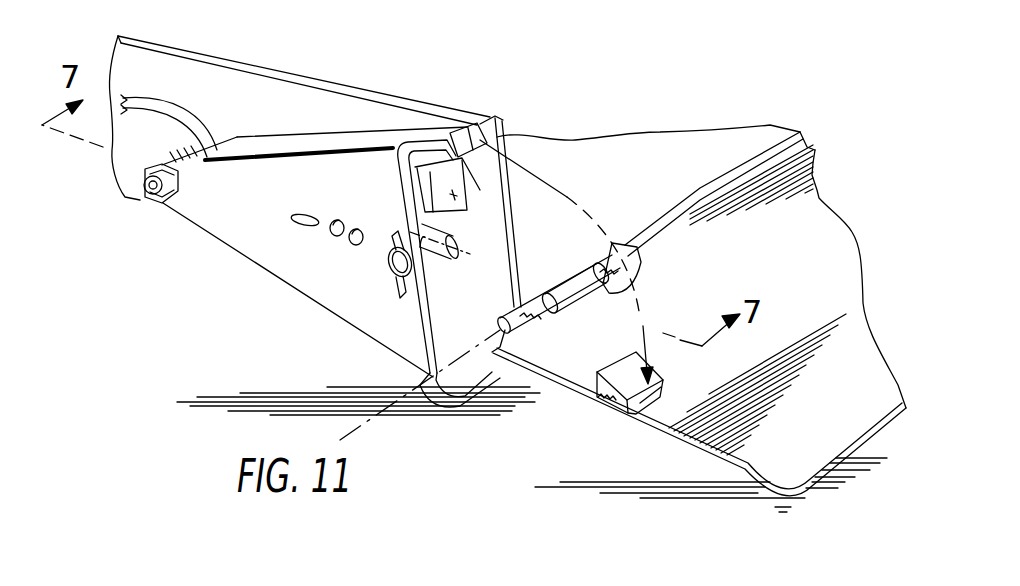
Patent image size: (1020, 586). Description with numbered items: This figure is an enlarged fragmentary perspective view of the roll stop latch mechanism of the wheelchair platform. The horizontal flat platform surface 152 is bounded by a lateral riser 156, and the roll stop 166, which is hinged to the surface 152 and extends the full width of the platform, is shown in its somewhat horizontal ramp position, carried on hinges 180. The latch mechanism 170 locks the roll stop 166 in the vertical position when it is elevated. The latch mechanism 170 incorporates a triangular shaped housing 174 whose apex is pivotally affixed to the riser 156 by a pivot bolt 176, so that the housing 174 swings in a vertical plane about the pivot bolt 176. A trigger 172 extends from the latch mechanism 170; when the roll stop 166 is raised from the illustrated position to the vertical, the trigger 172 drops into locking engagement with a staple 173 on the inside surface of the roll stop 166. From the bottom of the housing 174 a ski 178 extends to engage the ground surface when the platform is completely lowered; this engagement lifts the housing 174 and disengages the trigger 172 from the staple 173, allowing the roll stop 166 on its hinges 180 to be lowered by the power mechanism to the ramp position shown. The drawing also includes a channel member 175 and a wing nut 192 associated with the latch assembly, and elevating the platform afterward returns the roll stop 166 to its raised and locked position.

The platform surface 152 is at (699, 290).
The riser 156 is at (275, 71).
The roll stop 166 is at (765, 505).
The latch mechanism 170 is at (236, 258).
The trigger 172 is at (471, 137).
The staple 173 is at (617, 400).
The housing 174 is at (296, 196).
The channel member 175 is at (509, 215).
The pivot bolt 176 is at (150, 203).
The ski 178 is at (438, 413).
The hinges 180 is at (607, 296).
The wing nut 192 is at (390, 268).